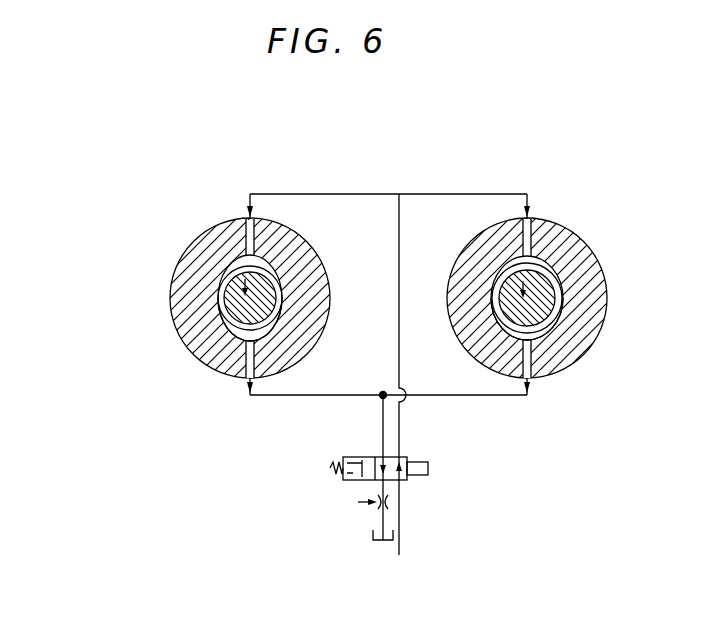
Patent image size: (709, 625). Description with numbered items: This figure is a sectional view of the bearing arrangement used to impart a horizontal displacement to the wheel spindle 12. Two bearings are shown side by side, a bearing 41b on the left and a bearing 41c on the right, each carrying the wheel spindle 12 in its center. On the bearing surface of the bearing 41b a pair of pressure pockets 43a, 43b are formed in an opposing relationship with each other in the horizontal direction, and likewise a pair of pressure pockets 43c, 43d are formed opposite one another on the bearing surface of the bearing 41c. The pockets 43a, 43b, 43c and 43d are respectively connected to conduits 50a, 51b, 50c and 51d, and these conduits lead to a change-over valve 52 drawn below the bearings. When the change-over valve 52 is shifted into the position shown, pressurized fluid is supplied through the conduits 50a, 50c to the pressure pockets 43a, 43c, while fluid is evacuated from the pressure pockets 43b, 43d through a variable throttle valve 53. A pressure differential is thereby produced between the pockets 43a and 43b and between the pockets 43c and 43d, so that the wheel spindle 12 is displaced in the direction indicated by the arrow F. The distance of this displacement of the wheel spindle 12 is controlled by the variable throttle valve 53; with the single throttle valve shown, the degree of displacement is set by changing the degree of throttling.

The wheel spindle 12 is at (272, 301).
The bearing 41b is at (323, 280).
The bearing 41c is at (598, 287).
The pressure pocket 43a is at (263, 262).
The pressure pocket 43b is at (263, 334).
The pressure pocket 43c is at (541, 262).
The pressure pocket 43d is at (542, 334).
The conduit 50a is at (256, 231).
The conduit 50c is at (532, 234).
The conduit 51b is at (258, 372).
The conduit 51d is at (541, 367).
The change-over valve 52 is at (406, 456).
The variable throttle valve 53 is at (372, 507).